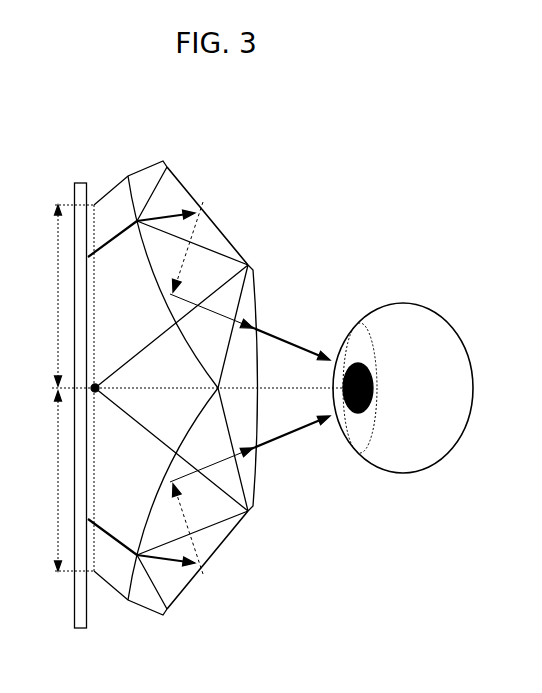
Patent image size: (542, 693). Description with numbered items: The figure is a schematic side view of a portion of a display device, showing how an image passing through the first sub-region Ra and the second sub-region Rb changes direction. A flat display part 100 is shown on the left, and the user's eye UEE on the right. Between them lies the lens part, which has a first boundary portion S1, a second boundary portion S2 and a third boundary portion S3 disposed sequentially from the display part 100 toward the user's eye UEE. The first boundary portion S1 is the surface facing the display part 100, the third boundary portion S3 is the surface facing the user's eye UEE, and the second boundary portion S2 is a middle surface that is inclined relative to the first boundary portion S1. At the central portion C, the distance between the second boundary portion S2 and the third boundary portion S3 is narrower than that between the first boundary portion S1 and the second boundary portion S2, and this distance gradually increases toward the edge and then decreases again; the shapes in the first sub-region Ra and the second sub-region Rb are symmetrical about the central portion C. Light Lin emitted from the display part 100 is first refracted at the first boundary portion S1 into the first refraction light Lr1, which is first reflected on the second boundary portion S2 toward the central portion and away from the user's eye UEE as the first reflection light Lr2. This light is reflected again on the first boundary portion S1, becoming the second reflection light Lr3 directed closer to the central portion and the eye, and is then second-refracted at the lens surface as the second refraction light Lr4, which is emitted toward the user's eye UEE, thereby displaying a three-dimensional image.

The display part 100 is at (80, 183).
The light Lin is at (117, 233).
The first refraction light Lr1 is at (162, 215).
The first reflection light Lr2 is at (185, 258).
The second reflection light Lr3 is at (220, 312).
The second refraction light Lr4 is at (292, 343).
The first boundary portion S1 is at (93, 339).
The second boundary portion S2 is at (147, 248).
The third boundary portion S3 is at (243, 257).
The user's eye UEE is at (400, 303).
The first sub-region Ra is at (61, 295).
The second sub-region Rb is at (61, 481).
The central portion C is at (93, 394).